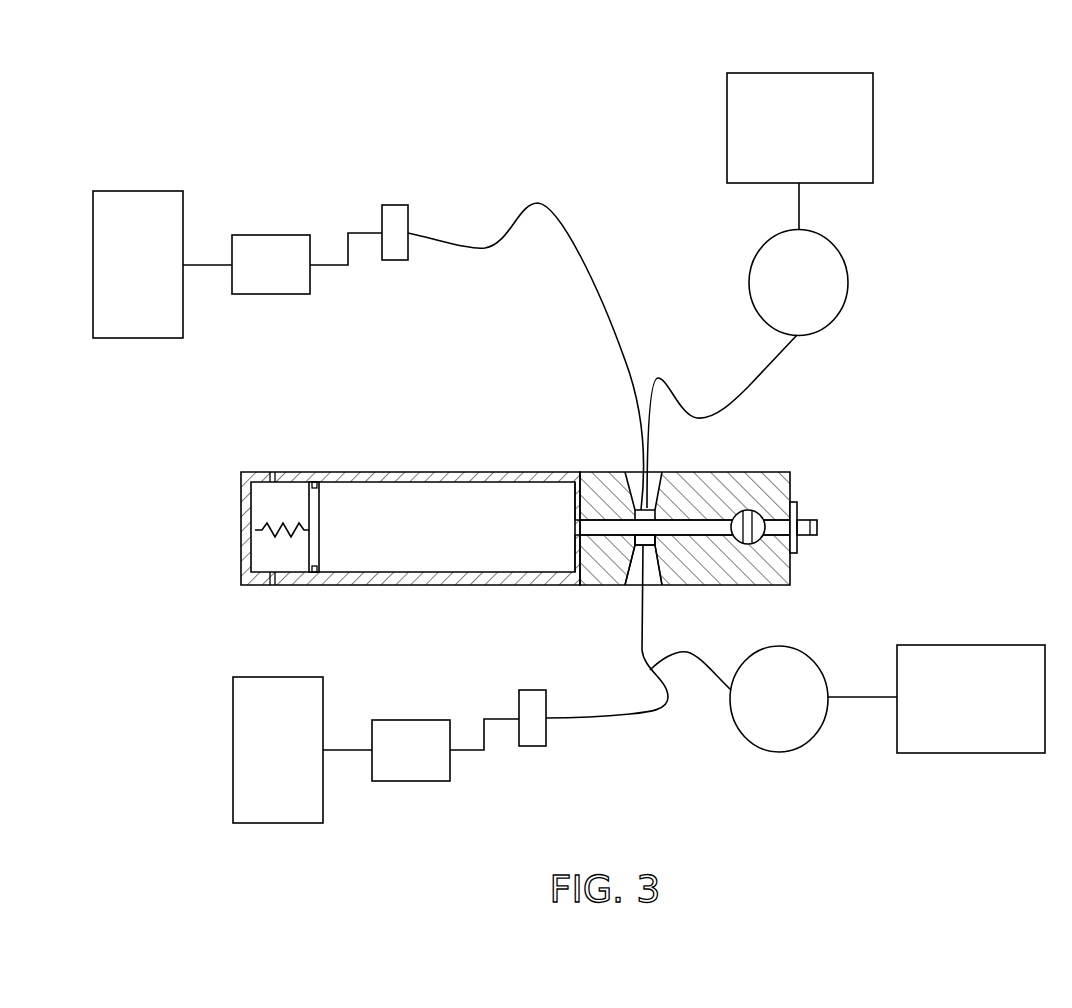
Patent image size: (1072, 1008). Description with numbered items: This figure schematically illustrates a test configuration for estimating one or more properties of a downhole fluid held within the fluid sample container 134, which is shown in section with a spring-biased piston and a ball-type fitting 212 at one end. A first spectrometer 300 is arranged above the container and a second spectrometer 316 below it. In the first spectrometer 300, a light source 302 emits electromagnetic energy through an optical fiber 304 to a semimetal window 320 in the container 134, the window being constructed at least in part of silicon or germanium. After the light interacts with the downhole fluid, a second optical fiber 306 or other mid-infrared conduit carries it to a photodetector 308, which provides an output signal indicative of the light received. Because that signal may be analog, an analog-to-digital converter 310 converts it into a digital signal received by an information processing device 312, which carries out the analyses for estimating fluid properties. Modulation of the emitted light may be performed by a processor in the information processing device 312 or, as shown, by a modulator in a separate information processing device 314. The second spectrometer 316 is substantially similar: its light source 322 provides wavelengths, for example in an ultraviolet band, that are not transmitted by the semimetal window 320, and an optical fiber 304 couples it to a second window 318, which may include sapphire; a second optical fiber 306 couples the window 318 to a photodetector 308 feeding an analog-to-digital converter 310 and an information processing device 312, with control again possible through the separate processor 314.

The fluid sample container 134 is at (370, 472).
The ball valve 212 is at (755, 515).
The spectrometer 300 is at (907, 221).
The light source 302 is at (848, 280).
The optical fiber 304 is at (748, 387).
The second optical fiber 306 is at (537, 200).
The photodetector 308 is at (392, 205).
The analog-to-digital converter 310 is at (271, 235).
The information processing device 312 is at (135, 191).
The separate information processing device 314 is at (762, 73).
The second spectrometer 316 is at (865, 808).
The window 318 is at (655, 545).
The semimetal window 320 is at (633, 472).
The light source 322 is at (779, 752).